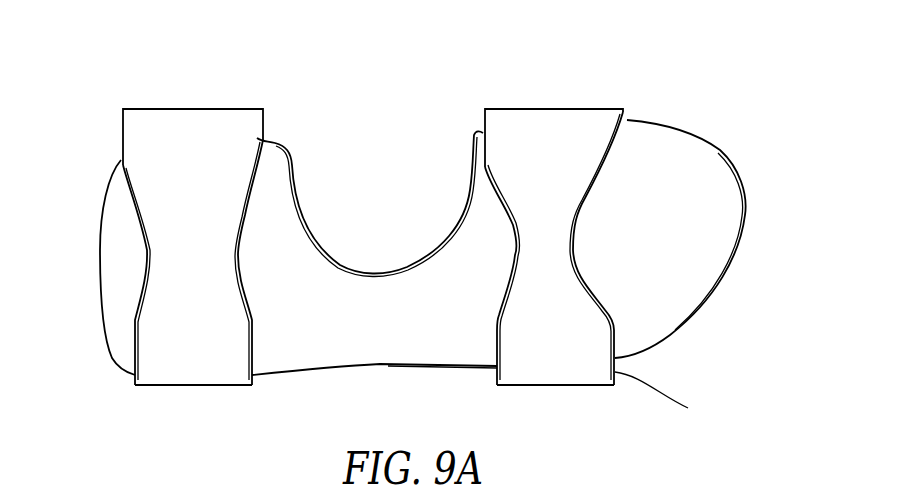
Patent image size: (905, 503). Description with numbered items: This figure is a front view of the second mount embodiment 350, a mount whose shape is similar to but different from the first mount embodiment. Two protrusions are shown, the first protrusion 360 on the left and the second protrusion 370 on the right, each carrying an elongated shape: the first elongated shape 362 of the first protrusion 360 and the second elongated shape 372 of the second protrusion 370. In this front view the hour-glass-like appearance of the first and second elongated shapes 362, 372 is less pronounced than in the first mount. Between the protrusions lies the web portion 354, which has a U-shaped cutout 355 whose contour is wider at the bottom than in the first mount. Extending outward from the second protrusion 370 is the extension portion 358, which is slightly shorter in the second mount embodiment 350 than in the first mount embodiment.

The second mount embodiment 350 is at (435, 221).
The web portion 354 is at (382, 366).
The U-shaped cutout 355 is at (309, 225).
The extension portion 358 is at (747, 215).
The first protrusion 360 is at (268, 105).
The first elongated shape 362 is at (123, 130).
The second protrusion 370 is at (630, 107).
The second elongated shape 372 is at (671, 397).